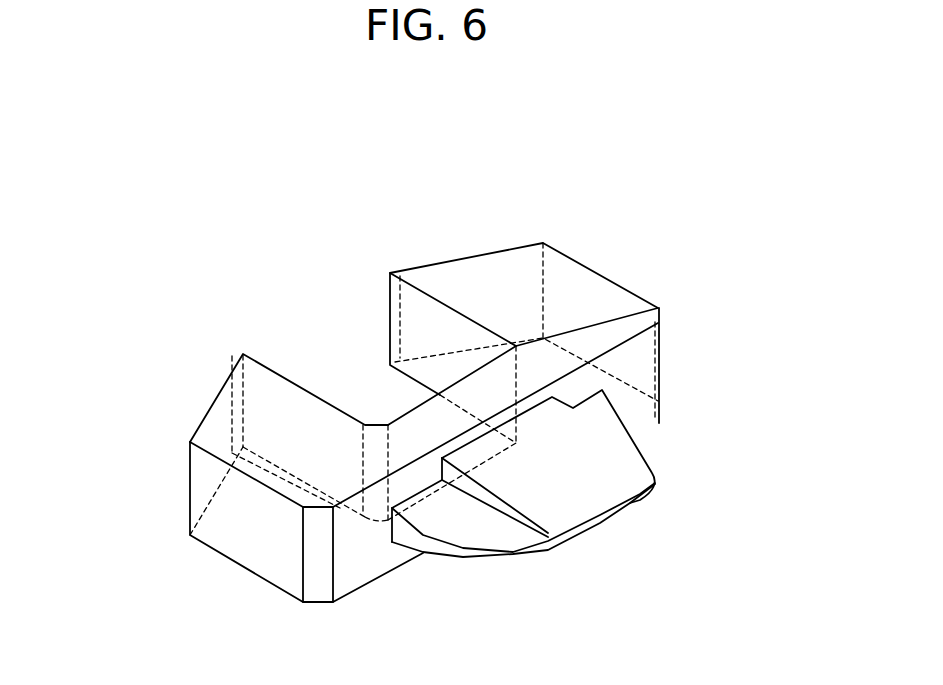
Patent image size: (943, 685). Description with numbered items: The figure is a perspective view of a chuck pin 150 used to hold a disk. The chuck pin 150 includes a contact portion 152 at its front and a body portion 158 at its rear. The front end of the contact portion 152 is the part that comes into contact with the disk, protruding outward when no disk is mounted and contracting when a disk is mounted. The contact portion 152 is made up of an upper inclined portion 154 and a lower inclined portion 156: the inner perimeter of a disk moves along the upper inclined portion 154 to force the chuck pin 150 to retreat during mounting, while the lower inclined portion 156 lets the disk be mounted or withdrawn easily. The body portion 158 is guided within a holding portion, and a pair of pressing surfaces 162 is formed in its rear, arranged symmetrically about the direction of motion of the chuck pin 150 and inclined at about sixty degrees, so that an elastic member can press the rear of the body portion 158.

The chuck pin 150 is at (700, 163).
The contact portion 152 is at (652, 430).
The upper inclined portion 154 is at (603, 490).
The lower inclined portion 156 is at (437, 545).
The body portion 158 is at (253, 550).
The pressing surface 162 is at (464, 270).